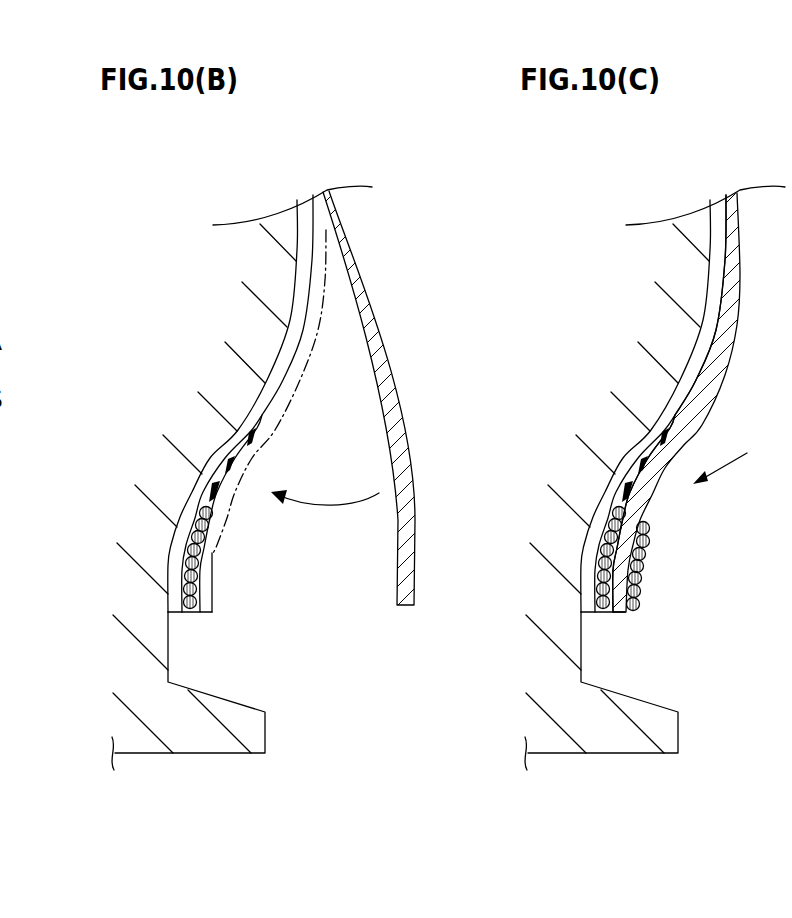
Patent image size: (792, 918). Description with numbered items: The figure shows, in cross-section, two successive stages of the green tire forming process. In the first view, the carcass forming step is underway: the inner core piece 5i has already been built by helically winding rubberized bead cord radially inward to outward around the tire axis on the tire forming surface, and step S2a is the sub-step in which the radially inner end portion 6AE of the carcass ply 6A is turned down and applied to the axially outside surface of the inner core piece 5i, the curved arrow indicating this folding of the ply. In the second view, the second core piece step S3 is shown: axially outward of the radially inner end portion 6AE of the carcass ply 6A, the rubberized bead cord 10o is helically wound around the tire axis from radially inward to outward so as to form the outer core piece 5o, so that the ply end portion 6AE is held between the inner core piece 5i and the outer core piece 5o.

In FIG. 10B, the carcass ply 6A is at (387, 352).
In FIG. 10B, the radially inner end portion of the carcass ply 6AE is at (215, 550).
In FIG. 10C, the radially inner end portion of the carcass ply 6AE is at (623, 528).
In FIG. 10B, the inner core piece 5i is at (192, 622).
In FIG. 10C, the outer core piece 5o is at (656, 570).
In FIG. 10C, the rubberized bead cord 10o is at (641, 608).
In FIG. 10B, the step of applying the radially inner end portion S2a is at (325, 508).
In FIG. 10C, the second core piece step S3 is at (736, 461).